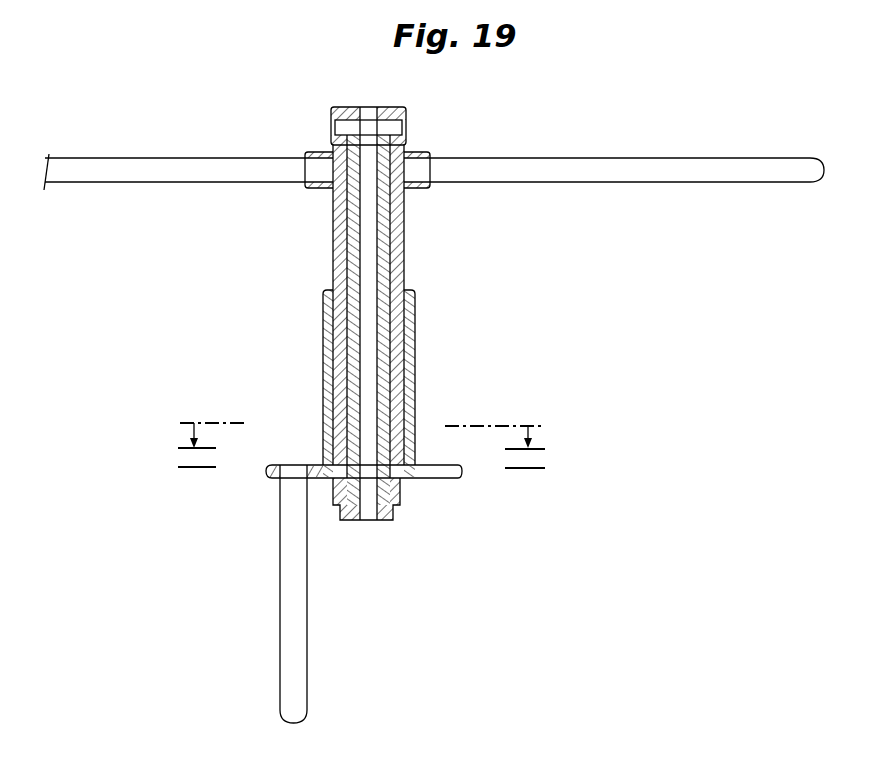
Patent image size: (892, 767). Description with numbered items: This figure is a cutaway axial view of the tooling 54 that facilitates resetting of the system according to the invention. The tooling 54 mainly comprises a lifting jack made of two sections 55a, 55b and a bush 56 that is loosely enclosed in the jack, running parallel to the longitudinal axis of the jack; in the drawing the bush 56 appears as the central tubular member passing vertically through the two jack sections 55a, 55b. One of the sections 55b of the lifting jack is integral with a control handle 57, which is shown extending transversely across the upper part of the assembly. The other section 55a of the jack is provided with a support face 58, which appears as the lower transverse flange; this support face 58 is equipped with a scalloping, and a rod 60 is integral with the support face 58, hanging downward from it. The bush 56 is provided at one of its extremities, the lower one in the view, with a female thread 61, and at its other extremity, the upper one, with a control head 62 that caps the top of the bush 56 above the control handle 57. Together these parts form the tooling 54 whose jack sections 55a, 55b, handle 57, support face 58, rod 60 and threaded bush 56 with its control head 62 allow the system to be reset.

The tooling 54 is at (210, 491).
The lifting jack section 55a is at (330, 310).
The lifting jack section 55b is at (337, 238).
The bush 56 is at (352, 361).
The control handle 57 is at (613, 172).
The support face 58 is at (320, 464).
The rod 60 is at (290, 608).
The female thread 61 is at (364, 508).
The control head 62 is at (340, 107).